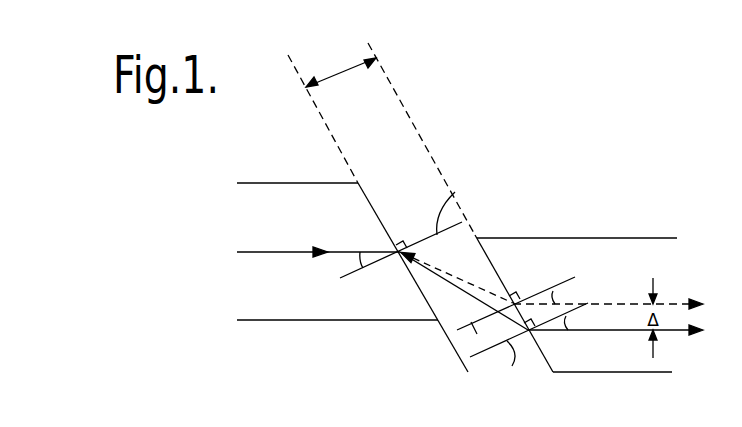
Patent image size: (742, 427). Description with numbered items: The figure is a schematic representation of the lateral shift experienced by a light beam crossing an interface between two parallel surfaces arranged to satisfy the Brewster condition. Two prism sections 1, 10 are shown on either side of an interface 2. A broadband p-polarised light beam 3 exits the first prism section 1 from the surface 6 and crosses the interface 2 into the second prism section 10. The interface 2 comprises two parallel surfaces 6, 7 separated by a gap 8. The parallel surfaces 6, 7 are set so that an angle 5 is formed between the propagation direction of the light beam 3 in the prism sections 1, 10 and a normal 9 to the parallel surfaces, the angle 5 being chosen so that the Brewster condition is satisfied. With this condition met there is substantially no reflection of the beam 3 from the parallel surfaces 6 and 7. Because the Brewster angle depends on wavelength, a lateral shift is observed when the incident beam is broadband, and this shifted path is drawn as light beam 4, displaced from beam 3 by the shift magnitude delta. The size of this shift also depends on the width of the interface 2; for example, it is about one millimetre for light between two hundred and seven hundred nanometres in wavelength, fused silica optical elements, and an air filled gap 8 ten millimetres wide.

The prism section 1 is at (268, 211).
The interface 2 is at (341, 67).
The light beam 3 is at (261, 253).
The light beam 4 is at (683, 303).
The angle 5 is at (357, 262).
The surface 6 is at (378, 212).
The surface 7 is at (490, 258).
The gap 8 is at (387, 121).
The normal 9 is at (455, 192).
The prism section 10 is at (636, 256).